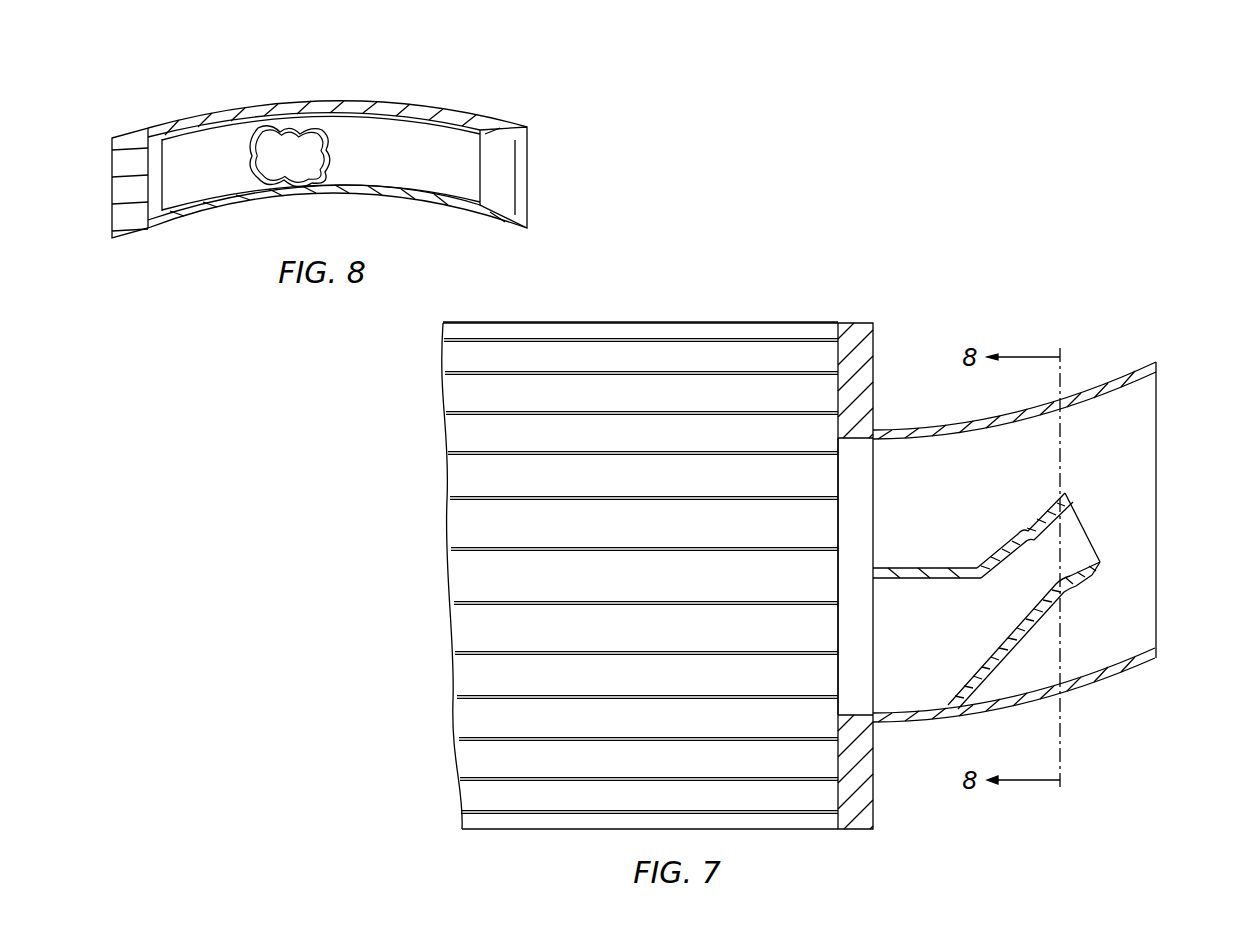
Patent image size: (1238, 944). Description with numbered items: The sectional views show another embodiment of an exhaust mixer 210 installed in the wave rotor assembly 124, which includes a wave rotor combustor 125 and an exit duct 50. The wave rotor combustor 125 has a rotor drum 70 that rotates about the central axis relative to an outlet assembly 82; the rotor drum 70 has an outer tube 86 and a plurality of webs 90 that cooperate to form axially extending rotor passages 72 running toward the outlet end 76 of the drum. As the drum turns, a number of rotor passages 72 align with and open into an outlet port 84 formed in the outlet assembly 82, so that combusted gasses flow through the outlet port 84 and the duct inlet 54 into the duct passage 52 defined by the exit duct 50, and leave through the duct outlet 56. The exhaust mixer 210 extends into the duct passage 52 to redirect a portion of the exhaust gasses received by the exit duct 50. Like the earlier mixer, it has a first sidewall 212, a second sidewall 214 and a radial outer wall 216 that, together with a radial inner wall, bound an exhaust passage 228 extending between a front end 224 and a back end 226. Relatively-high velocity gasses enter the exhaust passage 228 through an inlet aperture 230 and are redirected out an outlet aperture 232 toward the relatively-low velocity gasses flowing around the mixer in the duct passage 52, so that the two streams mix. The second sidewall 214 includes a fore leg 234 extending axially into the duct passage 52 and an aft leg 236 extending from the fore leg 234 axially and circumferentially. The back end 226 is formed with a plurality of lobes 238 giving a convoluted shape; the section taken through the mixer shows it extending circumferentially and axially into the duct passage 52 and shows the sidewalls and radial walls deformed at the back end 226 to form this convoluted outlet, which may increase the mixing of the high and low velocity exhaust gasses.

In FIG. 8, the exit duct 50 is at (487, 113).
In FIG. 7, the exit duct 50 is at (1125, 365).
In FIG. 8, the duct passage 52 is at (428, 173).
In FIG. 7, the duct passage 52 is at (915, 467).
In FIG. 7, the duct inlet 54 is at (870, 524).
In FIG. 8, the duct outlet 56 is at (498, 173).
In FIG. 7, the duct outlet 56 is at (1160, 432).
In FIG. 7, the rotor drum 70 is at (621, 571).
In FIG. 7, the rotor passages 72 is at (480, 523).
In FIG. 7, the outlet end 76 is at (893, 332).
In FIG. 7, the outlet assembly 82 is at (850, 323).
In FIG. 7, the outlet port 84 is at (843, 452).
In FIG. 7, the outer tube 86 is at (633, 323).
In FIG. 7, the webs 90 is at (530, 372).
In FIG. 8, the wave rotor assembly 124 is at (440, 65).
In FIG. 7, the wave rotor assembly 124 is at (888, 258).
In FIG. 7, the wave rotor combustor 125 is at (707, 305).
In FIG. 8, the exhaust mixer 210 is at (267, 107).
In FIG. 7, the exhaust mixer 210 is at (1075, 602).
In FIG. 8, the first sidewall 212 is at (203, 165).
In FIG. 7, the first sidewall 212 is at (1010, 660).
In FIG. 8, the second sidewall 214 is at (300, 143).
In FIG. 7, the second sidewall 214 is at (975, 562).
In FIG. 8, the radial outer wall 216 is at (282, 125).
In FIG. 7, the front end 224 is at (868, 602).
In FIG. 7, the back end 226 is at (1103, 555).
In FIG. 8, the exhaust passage 228 is at (283, 165).
In FIG. 7, the exhaust passage 228 is at (930, 648).
In FIG. 7, the inlet aperture 230 is at (872, 628).
In FIG. 8, the outlet aperture 232 is at (317, 160).
In FIG. 7, the outlet aperture 232 is at (1083, 517).
In FIG. 7, the fore leg 234 is at (920, 567).
In FIG. 7, the aft leg 236 is at (1025, 530).
In FIG. 8, the lobes 238 is at (248, 163).
In FIG. 7, the lobes 238 is at (1063, 583).